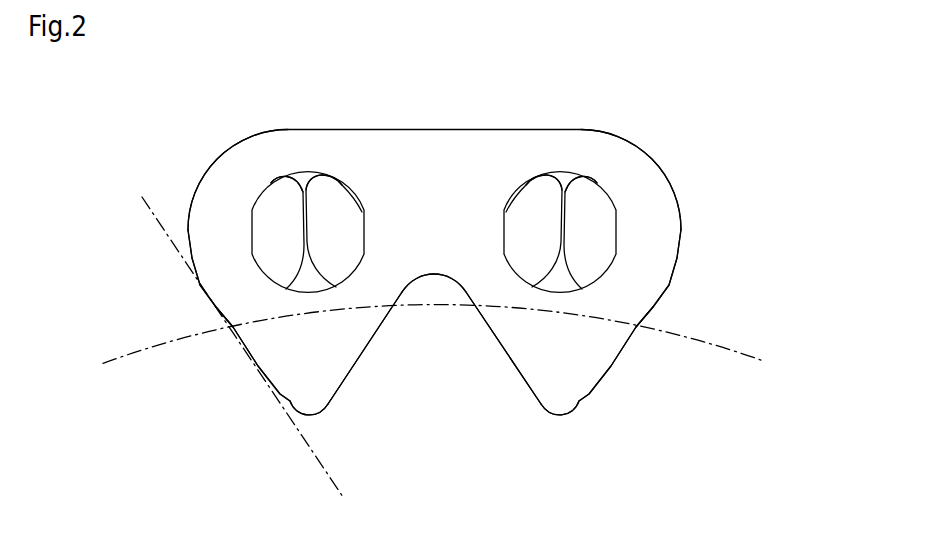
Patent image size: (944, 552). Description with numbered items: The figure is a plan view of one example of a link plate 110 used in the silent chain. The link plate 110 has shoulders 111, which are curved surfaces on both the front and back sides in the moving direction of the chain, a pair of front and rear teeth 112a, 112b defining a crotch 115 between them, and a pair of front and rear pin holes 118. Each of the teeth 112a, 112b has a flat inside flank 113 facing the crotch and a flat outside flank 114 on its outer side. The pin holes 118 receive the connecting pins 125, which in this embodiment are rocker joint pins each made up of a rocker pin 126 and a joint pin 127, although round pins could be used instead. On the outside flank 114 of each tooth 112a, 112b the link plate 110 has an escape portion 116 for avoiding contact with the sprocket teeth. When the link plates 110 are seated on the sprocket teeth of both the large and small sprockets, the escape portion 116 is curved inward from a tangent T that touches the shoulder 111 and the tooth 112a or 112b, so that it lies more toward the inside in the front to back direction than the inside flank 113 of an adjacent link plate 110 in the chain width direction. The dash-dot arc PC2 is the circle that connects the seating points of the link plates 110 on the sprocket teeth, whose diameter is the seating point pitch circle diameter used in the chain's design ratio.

The link plate 110 is at (652, 147).
The shoulder 111 is at (206, 175).
The front tooth 112a is at (317, 400).
The rear tooth 112b is at (569, 400).
The inside flank 113 is at (350, 378).
The outside flank 114 is at (258, 372).
The central peak portion 115 is at (433, 276).
The escape portion 116 is at (233, 333).
The pin hole 118 is at (357, 192).
The connecting pin 125 is at (330, 73).
The rocker pin 126 is at (273, 205).
The joint pin 127 is at (322, 203).
The circle connecting the seating points PC2 is at (772, 362).
The tangent T is at (335, 494).